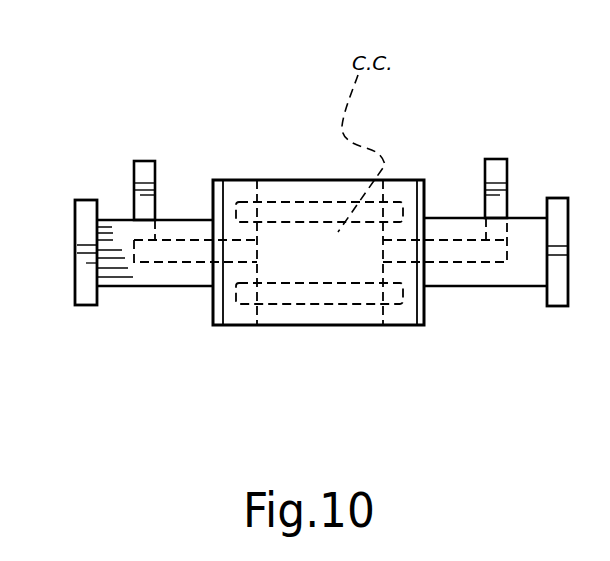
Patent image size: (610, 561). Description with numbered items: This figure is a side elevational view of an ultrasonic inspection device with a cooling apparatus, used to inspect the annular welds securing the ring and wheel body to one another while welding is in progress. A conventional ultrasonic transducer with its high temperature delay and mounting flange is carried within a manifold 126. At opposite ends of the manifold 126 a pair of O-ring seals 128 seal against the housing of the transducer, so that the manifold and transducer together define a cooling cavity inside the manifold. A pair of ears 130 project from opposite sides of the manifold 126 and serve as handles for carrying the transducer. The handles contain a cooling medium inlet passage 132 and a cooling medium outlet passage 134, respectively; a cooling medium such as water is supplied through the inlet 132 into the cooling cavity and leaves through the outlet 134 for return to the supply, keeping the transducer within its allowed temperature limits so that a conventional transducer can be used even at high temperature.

The manifold 126 is at (425, 313).
The O-ring seals 128 is at (300, 197).
The ears 130 is at (140, 287).
The cooling medium inlet passage 132 is at (492, 182).
The cooling medium outlet passage 134 is at (147, 178).